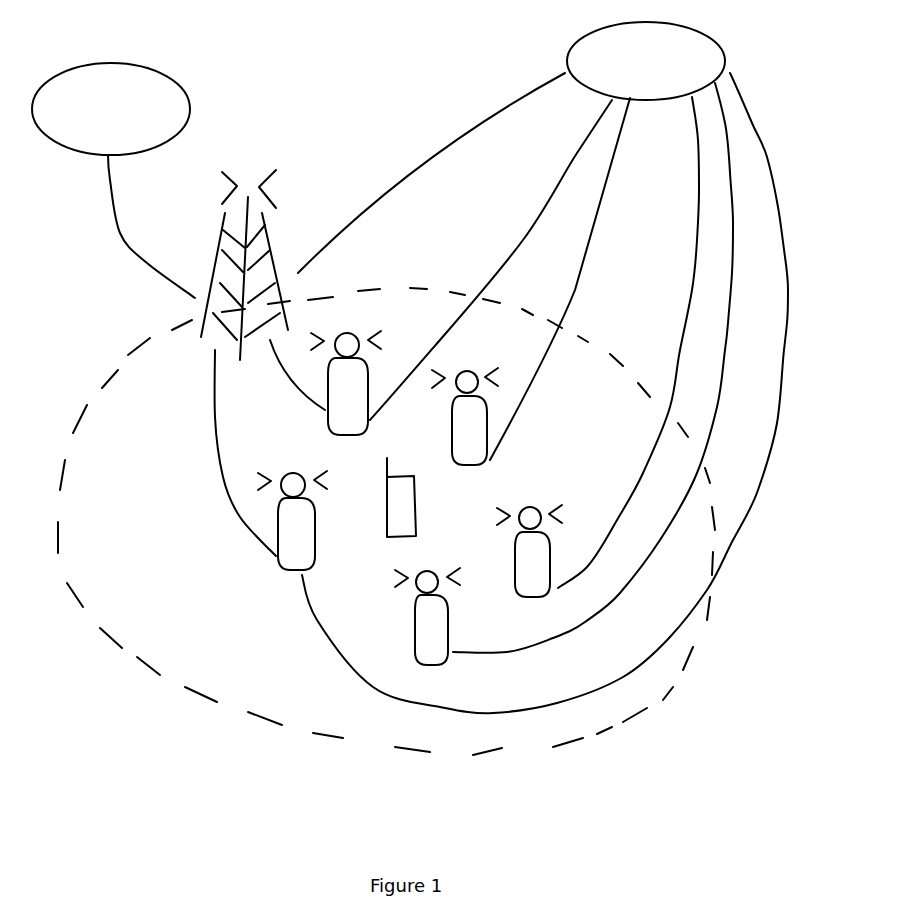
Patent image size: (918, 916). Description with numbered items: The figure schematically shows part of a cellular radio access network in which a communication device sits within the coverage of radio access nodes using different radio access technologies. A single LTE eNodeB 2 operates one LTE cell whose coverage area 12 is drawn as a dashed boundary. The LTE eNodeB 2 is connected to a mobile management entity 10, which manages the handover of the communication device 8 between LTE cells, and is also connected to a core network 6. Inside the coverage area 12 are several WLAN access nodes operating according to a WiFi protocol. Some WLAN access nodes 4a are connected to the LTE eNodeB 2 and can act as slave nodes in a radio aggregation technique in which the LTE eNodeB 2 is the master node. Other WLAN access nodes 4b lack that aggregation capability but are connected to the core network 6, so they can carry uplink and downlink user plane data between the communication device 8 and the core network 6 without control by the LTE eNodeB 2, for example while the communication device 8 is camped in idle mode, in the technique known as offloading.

The LTE eNodeB 2 is at (280, 257).
The WLAN access nodes 4a is at (340, 412).
The WLAN access nodes 4b is at (466, 466).
The core network 6 is at (720, 42).
The communication device 8 is at (418, 518).
The mobile management entity 10 is at (172, 77).
The coverage area 12 is at (70, 603).